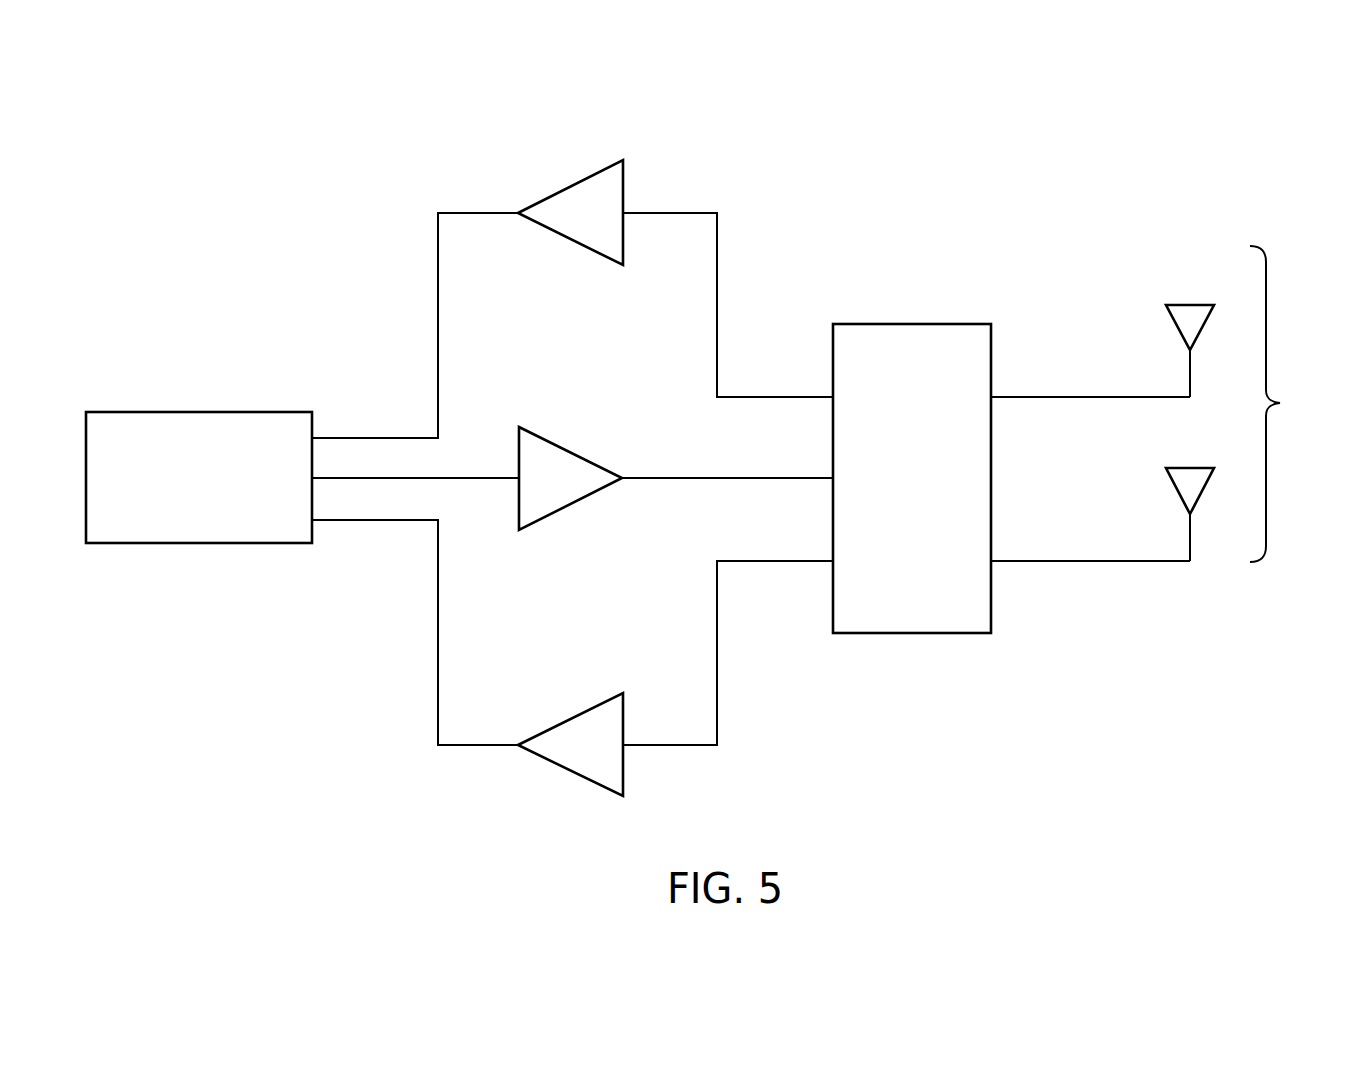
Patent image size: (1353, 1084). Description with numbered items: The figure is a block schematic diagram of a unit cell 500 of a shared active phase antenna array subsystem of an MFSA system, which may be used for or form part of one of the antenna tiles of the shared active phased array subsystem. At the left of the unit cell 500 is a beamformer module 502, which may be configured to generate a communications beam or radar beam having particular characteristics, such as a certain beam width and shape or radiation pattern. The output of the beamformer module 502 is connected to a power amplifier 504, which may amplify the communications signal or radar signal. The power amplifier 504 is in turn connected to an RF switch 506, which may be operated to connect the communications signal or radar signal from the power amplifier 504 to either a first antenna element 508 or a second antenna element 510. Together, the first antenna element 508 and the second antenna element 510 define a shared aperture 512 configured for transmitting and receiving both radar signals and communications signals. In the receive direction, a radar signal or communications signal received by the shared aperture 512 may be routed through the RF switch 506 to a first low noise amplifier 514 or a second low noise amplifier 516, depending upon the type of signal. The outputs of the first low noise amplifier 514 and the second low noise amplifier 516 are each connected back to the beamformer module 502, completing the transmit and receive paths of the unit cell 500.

The unit cell 500 is at (930, 138).
The beamformer module 502 is at (188, 412).
The power amplifier 504 is at (565, 448).
The RF switch 506 is at (901, 324).
The first antenna element 508 is at (1189, 305).
The second antenna element 510 is at (1190, 468).
The shared aperture 512 is at (1295, 404).
The first low noise amplifier 514 is at (573, 186).
The second low noise amplifier 516 is at (572, 717).